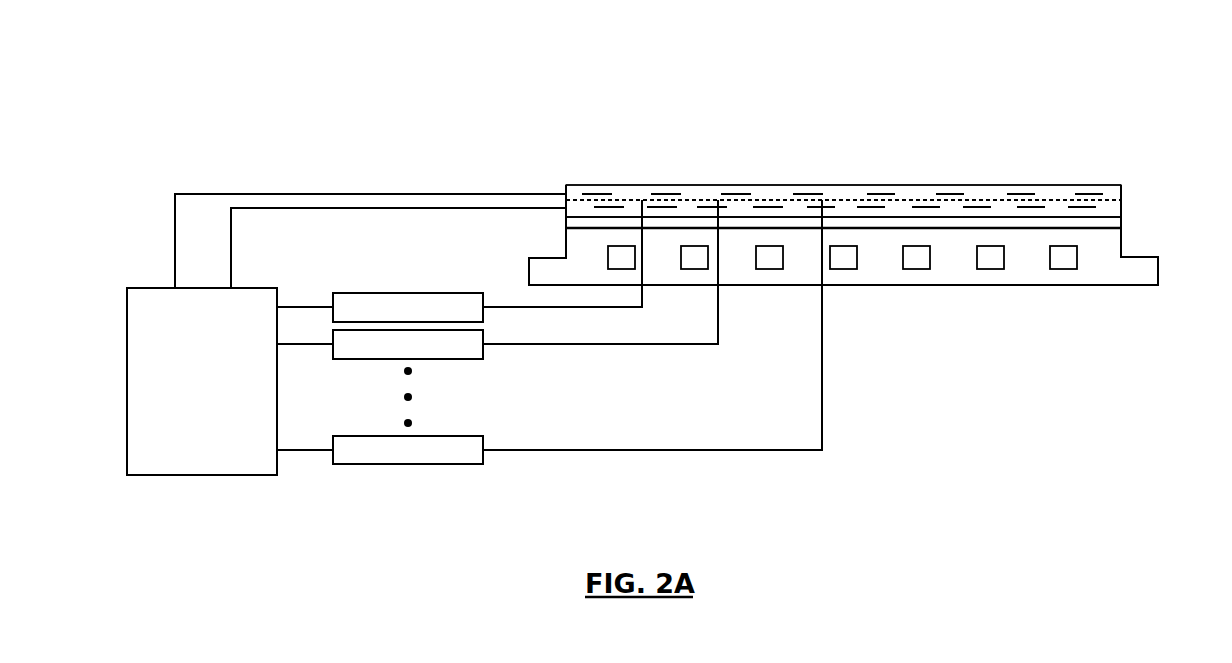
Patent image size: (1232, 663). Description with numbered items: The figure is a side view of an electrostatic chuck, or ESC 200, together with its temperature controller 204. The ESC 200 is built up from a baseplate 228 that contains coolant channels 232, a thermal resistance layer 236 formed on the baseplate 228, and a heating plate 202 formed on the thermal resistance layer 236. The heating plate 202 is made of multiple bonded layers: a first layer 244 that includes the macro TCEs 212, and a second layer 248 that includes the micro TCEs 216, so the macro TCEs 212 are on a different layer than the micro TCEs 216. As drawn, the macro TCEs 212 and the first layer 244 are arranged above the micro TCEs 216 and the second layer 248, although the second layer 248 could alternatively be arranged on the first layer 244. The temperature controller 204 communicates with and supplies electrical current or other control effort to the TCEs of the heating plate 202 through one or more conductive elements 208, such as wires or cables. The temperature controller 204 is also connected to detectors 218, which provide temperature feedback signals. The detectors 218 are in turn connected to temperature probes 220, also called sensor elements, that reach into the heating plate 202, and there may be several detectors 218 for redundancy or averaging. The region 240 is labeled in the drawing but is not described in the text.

The electrostatic chuck 200 is at (1057, 92).
The heating plate 202 is at (566, 185).
The temperature controller 204 is at (127, 345).
The conductive elements 208 is at (340, 194).
The macro TCEs 212 is at (1083, 193).
The micro TCEs 216 is at (880, 207).
The detectors 218 is at (377, 293).
The temperature probes 220 is at (642, 200).
The baseplate 228 is at (1158, 270).
The coolant channels 232 is at (1074, 269).
The thermal resistance layer 236 is at (578, 228).
The vapor chamber 240 is at (728, 185).
The first layer 244 is at (1121, 193).
The second layer 248 is at (1121, 207).